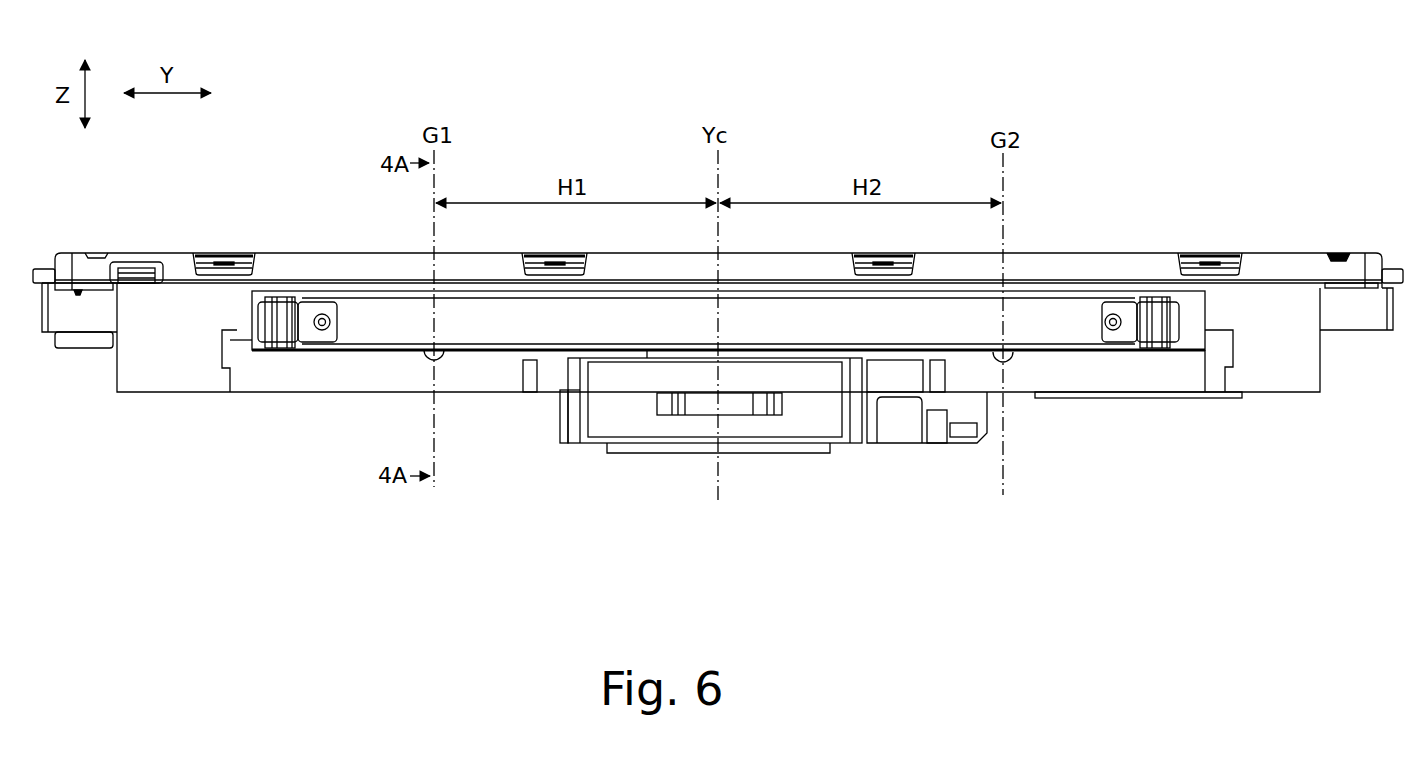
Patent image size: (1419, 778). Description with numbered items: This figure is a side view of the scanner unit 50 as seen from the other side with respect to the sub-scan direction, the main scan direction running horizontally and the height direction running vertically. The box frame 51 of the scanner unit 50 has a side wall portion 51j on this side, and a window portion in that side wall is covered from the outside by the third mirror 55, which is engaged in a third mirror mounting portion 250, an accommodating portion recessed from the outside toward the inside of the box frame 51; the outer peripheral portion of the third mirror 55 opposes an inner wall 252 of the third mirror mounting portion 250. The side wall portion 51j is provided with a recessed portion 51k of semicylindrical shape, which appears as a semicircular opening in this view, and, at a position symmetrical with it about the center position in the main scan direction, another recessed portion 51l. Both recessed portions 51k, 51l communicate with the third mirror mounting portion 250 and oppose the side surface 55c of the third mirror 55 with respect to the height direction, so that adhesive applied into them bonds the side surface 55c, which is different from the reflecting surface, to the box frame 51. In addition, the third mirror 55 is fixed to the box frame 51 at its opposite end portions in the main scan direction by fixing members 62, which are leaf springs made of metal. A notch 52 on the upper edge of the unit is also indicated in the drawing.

The scanner unit 50 is at (1204, 222).
The box frame 51 is at (160, 392).
The side wall portion 51j is at (490, 375).
The recessed portion 51k is at (423, 357).
The recessed portion 51l is at (1013, 356).
The engagement notch 52 is at (1338, 247).
The third mirror 55 is at (392, 310).
The side surface 55c is at (647, 352).
The fixing member 62 is at (313, 348).
The third mirror mounting portion 250 is at (806, 360).
The inner wall 252 is at (743, 349).